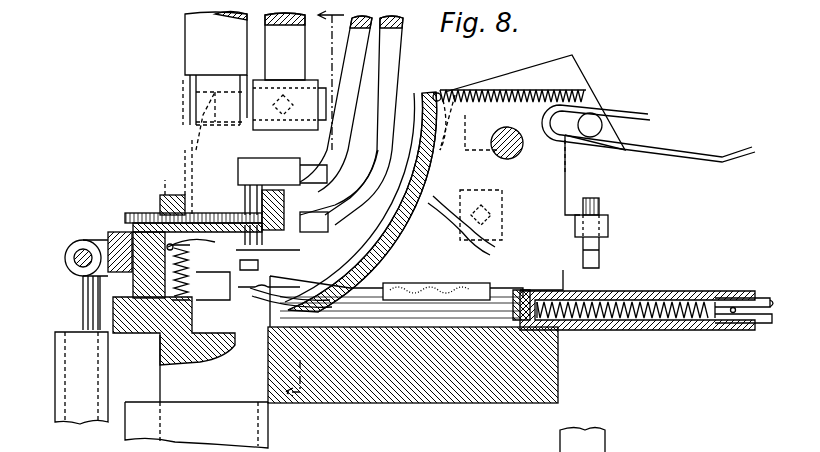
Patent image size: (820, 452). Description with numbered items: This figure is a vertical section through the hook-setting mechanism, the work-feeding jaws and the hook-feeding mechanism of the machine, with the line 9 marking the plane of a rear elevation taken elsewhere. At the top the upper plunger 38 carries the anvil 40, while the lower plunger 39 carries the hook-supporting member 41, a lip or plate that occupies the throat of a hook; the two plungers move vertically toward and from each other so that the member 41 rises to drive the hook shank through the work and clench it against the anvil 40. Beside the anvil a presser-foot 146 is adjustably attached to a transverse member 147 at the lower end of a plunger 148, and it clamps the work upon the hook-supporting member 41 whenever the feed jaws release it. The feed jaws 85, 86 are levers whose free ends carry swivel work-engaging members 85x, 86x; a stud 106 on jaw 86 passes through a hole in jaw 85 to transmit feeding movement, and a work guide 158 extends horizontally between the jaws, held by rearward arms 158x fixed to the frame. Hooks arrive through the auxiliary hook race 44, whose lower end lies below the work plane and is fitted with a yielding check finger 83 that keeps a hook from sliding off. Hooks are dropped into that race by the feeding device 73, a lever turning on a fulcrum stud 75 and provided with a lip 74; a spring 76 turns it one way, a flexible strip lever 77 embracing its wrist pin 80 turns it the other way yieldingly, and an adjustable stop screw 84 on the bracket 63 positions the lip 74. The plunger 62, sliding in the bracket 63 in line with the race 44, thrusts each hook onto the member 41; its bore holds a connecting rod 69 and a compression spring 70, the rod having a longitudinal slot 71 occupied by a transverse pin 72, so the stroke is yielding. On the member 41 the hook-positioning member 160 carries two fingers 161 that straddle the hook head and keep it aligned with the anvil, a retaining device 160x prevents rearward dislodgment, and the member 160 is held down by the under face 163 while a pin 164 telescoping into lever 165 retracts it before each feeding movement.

The plunger 38 is at (192, 35).
The anvil 40 is at (213, 113).
The plunger 148 is at (614, 440).
The transverse member 147 is at (293, 70).
The section line 9— 9 is at (315, 204).
The feed jaw 85 is at (360, 50).
The feed jaw 86 is at (385, 85).
The stud 106 is at (366, 192).
The work guide 158 is at (290, 232).
The arms 158x is at (364, 202).
The yielding check finger 83 is at (270, 278).
The auxiliary hook race 44 is at (312, 290).
The bracket 63 is at (378, 404).
The plunger 39 is at (196, 391).
The hook-positioning member 160 is at (114, 230).
The under face 163 is at (97, 256).
The pin 164 is at (72, 295).
The lever 165 is at (62, 380).
The hook-supporting member 41 is at (200, 210).
The presser-foot 146 is at (178, 140).
The fingers 161 is at (197, 269).
The retaining device 160x is at (212, 286).
The swivel work-engaging member 85x is at (240, 190).
The swivel work-engaging member 86x is at (268, 247).
The spring 76 is at (490, 85).
The feeding device 73 is at (575, 73).
The fulcrum stud 75 is at (516, 157).
The lip 74 is at (445, 200).
The wrist pin 80 is at (595, 122).
The operating lever 77 is at (730, 165).
The adjustable stop screw 84 is at (600, 207).
The plunger 62 is at (620, 334).
The compression spring 70 is at (677, 322).
The connecting rod 69 is at (766, 328).
The transverse pin 72 is at (734, 306).
The longitudinal slot 71 is at (772, 304).